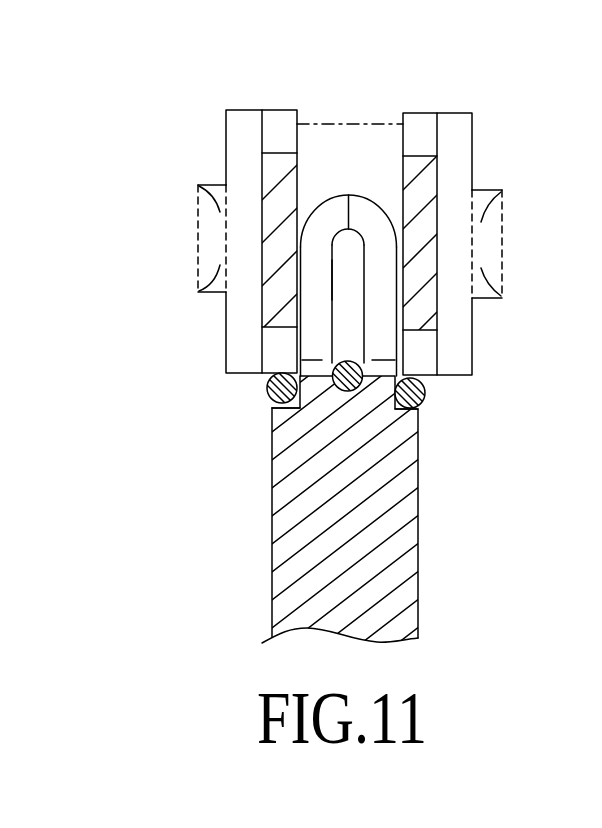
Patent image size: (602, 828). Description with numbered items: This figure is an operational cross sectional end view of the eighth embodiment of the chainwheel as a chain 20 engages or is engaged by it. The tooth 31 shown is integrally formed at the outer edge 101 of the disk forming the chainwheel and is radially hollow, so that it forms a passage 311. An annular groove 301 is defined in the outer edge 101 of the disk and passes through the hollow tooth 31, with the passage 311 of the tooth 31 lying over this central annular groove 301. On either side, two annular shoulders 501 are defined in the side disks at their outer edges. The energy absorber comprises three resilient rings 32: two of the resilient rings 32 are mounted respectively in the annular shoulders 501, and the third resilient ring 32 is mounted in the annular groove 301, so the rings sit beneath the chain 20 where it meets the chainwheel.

The chain 20 is at (482, 175).
The tooth 31 is at (359, 170).
The passage 311 is at (333, 290).
The resilient ring 32 is at (267, 383).
The annular shoulder 501 is at (267, 396).
The outer edge 101 is at (377, 377).
The annular groove 301 is at (345, 388).